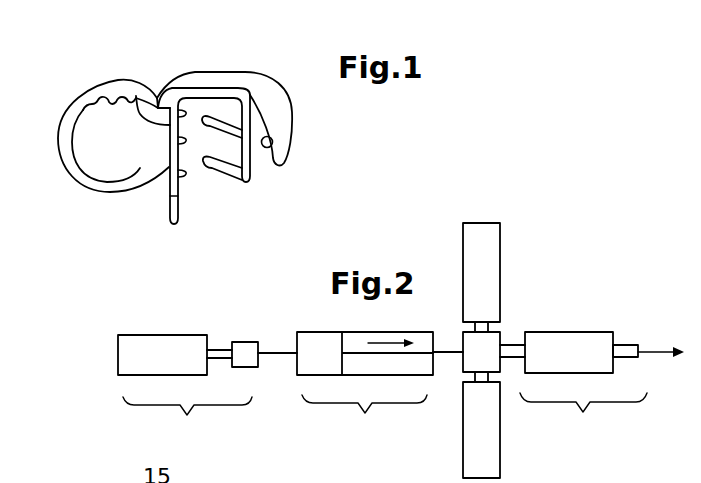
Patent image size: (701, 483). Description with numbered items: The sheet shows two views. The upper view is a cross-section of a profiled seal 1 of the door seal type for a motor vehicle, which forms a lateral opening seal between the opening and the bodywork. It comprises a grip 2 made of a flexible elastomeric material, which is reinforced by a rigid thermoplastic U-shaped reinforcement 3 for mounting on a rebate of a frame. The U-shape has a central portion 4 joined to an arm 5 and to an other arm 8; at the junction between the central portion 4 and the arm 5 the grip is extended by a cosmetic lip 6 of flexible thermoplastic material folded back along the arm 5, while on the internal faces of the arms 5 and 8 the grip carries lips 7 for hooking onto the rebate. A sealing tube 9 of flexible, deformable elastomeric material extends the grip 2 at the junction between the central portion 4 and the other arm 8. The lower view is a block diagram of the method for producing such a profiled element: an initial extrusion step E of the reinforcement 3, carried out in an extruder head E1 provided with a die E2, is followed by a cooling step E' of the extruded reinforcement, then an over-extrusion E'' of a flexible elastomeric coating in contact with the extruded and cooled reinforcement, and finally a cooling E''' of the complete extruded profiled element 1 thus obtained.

In FIG. 1, the profiled seal 1 is at (60, 194).
In FIG. 1, the grip 2 is at (229, 64).
In FIG. 1, the rigid thermoplastic U-shaped reinforcement 3 is at (169, 140).
In FIG. 1, the central portion 4 is at (203, 92).
In FIG. 1, the arm 5 is at (248, 168).
In FIG. 1, the cosmetic lip 6 is at (284, 112).
In FIG. 1, the lips 7 is at (223, 125).
In FIG. 1, the other arm 8 is at (136, 96).
In FIG. 1, the sealing tube 9 is at (106, 93).
In FIG. 2, the extruder head E1 is at (177, 335).
In FIG. 2, the die E2 is at (247, 342).
In FIG. 2, the extrusion step E is at (187, 421).
In FIG. 2, the cooling step E' is at (365, 387).
In FIG. 2, the over-extrusion step E'' is at (510, 350).
In FIG. 2, the cooling step of the profiled element E''' is at (573, 386).